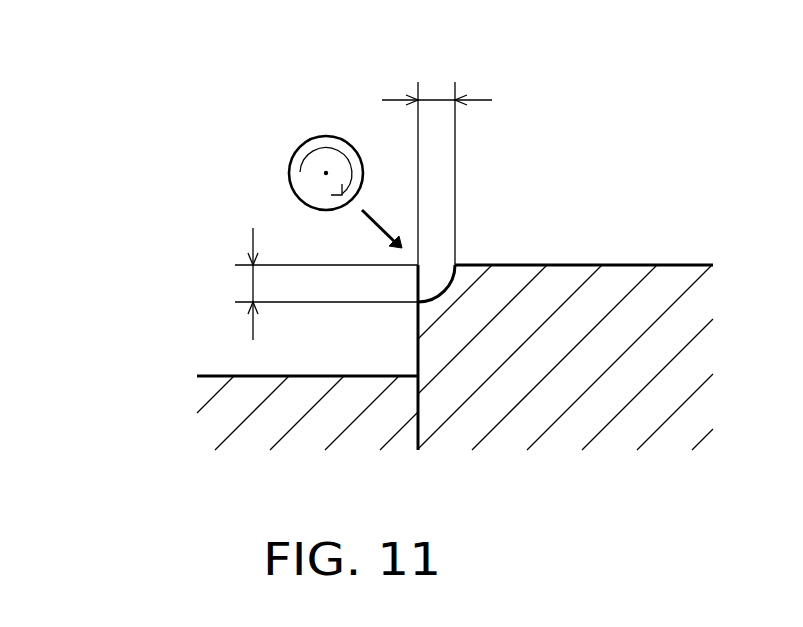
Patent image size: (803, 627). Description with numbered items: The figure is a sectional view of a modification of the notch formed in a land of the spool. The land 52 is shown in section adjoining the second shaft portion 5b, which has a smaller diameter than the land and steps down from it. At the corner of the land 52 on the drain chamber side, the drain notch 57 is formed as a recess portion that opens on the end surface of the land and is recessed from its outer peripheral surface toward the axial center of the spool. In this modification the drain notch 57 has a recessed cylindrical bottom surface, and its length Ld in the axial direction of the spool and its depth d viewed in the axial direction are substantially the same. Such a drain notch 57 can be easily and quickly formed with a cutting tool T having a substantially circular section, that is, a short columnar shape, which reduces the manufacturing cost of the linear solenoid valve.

The land 52 is at (540, 281).
The second shaft portion 5b is at (241, 391).
The drain notch 57 is at (438, 282).
The cutting tool T is at (290, 153).
The length of the drain notch Ld is at (437, 156).
The depth of the drain notch d is at (312, 284).